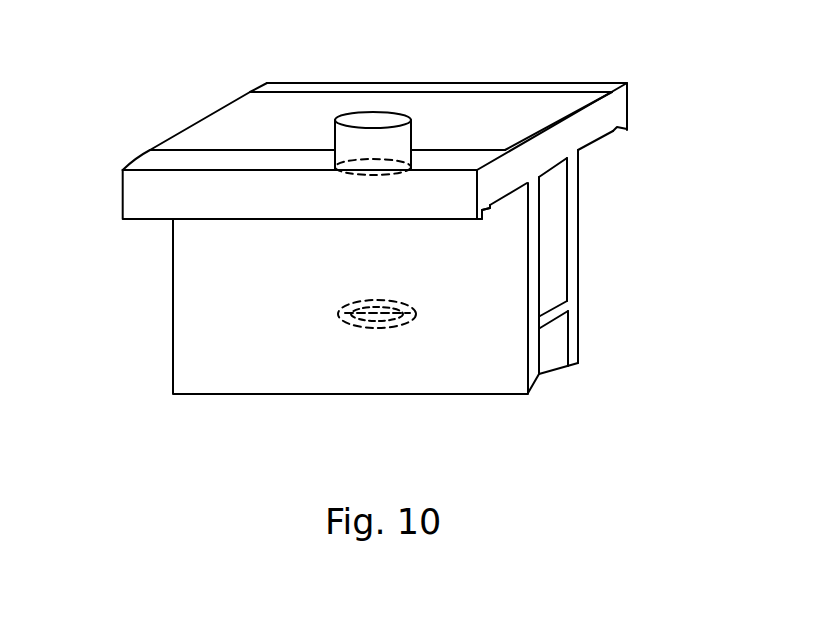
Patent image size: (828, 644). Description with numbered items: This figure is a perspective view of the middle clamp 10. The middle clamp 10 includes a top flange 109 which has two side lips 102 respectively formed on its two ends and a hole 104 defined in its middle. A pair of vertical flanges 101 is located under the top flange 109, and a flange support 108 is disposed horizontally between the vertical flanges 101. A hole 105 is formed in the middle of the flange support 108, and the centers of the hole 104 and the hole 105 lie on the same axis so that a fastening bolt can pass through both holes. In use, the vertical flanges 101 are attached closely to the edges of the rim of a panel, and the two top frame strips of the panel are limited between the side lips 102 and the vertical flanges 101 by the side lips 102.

The middle clamp 10 is at (268, 289).
The vertical flanges 101 is at (573, 240).
The side lips 102 is at (622, 131).
The hole 104 is at (373, 119).
The hole 105 is at (417, 313).
The flange support 108 is at (559, 308).
The top flange 109 is at (562, 137).